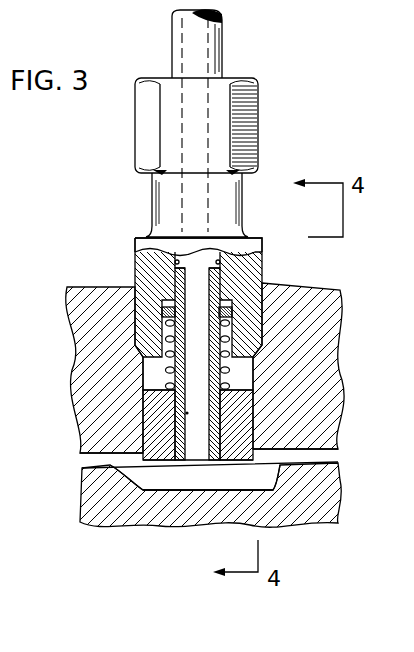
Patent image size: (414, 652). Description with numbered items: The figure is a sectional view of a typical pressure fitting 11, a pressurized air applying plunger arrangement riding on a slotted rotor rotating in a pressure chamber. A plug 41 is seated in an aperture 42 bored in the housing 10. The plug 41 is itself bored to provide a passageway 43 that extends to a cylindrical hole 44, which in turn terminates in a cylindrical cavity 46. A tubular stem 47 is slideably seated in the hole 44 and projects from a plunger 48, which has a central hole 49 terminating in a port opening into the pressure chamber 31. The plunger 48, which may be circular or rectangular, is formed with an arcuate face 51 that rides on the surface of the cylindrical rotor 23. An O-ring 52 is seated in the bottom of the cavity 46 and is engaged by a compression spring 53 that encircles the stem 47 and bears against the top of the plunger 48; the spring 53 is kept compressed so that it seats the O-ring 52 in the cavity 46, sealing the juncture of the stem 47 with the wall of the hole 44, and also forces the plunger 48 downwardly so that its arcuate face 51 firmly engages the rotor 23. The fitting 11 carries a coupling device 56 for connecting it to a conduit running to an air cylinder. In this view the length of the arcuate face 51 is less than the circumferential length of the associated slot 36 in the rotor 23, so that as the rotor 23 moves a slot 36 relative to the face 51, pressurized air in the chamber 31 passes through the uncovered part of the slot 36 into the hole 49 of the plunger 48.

The housing 10 is at (340, 280).
The pressure fitting 11 is at (124, 214).
The cylindrical rotor 23 is at (328, 517).
The pressure chamber 31 is at (330, 462).
The slot 36 is at (123, 502).
The plug 41 is at (135, 240).
The aperture 42 is at (263, 275).
The passageway 43 is at (252, 241).
The cylindrical hole 44 is at (137, 257).
The cylindrical cavity 46 is at (262, 338).
The tubular stem 47 is at (173, 362).
The plunger 48 is at (153, 432).
The central hole 49 is at (187, 413).
The arcuate face 51 is at (177, 485).
The O-ring 52 is at (165, 312).
The compression spring 53 is at (170, 340).
The coupling device 56 is at (258, 108).